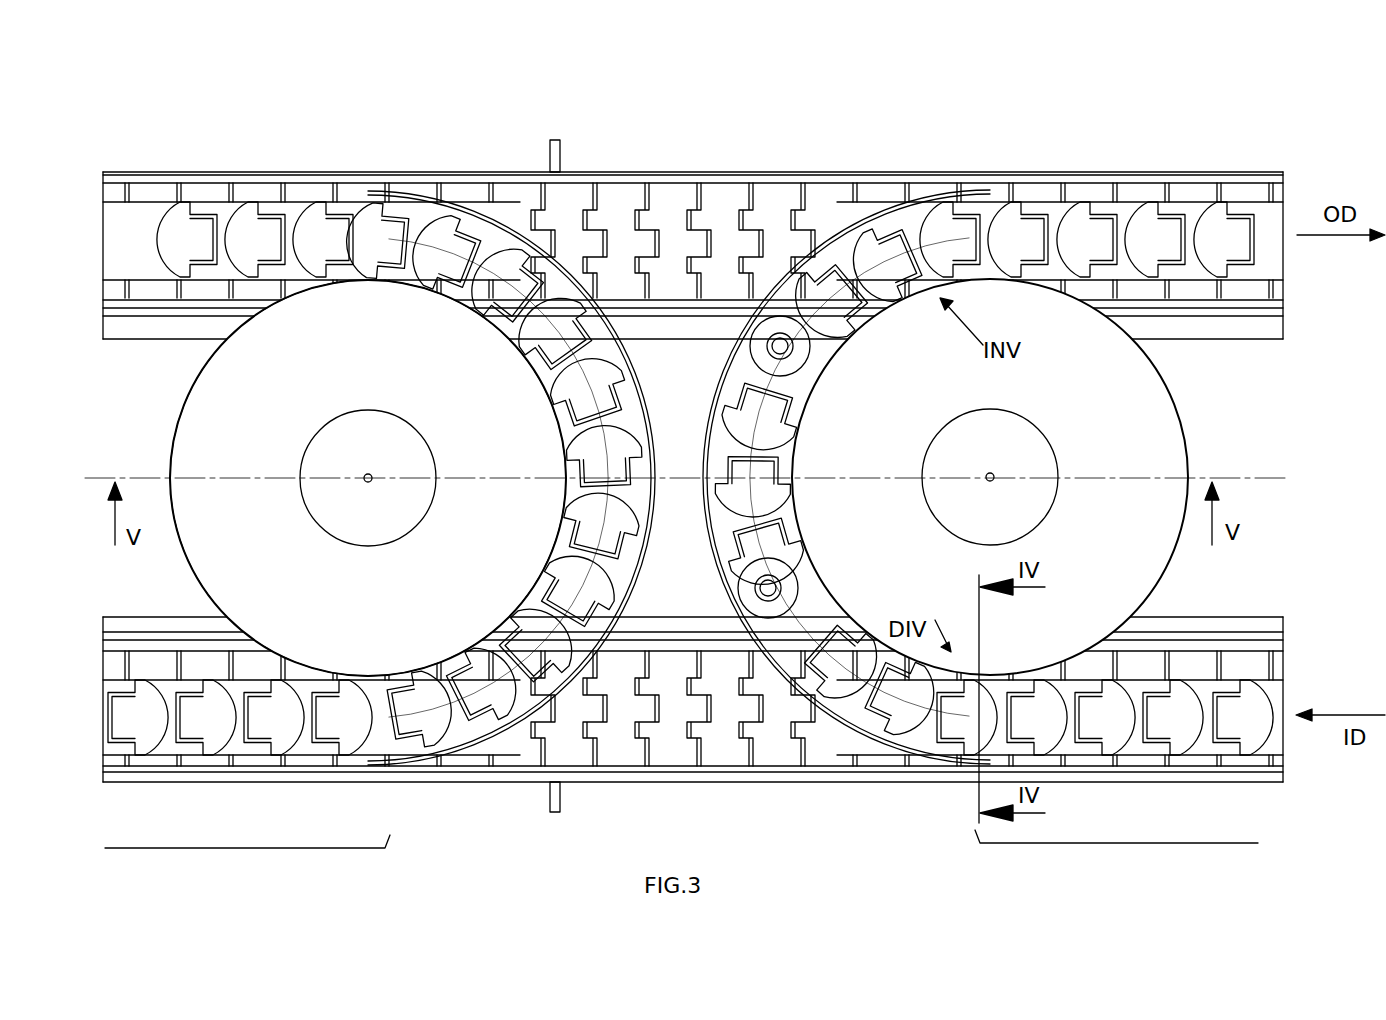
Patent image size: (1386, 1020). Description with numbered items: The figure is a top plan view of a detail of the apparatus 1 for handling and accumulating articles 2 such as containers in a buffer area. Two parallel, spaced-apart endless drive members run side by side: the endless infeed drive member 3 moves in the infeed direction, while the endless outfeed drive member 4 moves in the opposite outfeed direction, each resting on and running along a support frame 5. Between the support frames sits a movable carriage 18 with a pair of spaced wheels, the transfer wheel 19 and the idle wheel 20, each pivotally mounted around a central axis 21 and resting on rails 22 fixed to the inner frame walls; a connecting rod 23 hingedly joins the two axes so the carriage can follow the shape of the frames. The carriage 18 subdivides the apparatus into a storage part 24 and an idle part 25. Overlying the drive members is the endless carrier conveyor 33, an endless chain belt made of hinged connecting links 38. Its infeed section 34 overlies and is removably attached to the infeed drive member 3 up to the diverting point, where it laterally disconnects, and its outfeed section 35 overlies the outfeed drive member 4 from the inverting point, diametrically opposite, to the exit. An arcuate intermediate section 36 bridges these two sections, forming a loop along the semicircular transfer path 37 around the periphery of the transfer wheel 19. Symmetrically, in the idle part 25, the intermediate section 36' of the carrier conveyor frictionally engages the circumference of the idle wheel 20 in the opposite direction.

The apparatus 1 is at (190, 112).
The articles 2 is at (797, 357).
The endless infeed drive member 3 is at (1262, 660).
The endless outfeed drive member 4 is at (1243, 287).
The support frame 5 is at (1242, 337).
The movable carriage 18 is at (165, 557).
The transfer wheel 19 is at (1183, 420).
The idle wheel 20 is at (172, 432).
The central axis 21 is at (370, 482).
The rails 22 is at (1266, 330).
The connecting rod 23 is at (676, 488).
The storage part 24 is at (1150, 843).
The idle part 25 is at (235, 848).
The endless carrier conveyor 33 is at (258, 243).
The infeed section 34 is at (1240, 715).
The outfeed section 35 is at (1160, 230).
The arcuate intermediate section 36 is at (883, 644).
The intermediate section 36' is at (533, 389).
The semicircular transfer path 37 is at (770, 545).
The hinged connecting links 38 is at (1062, 675).